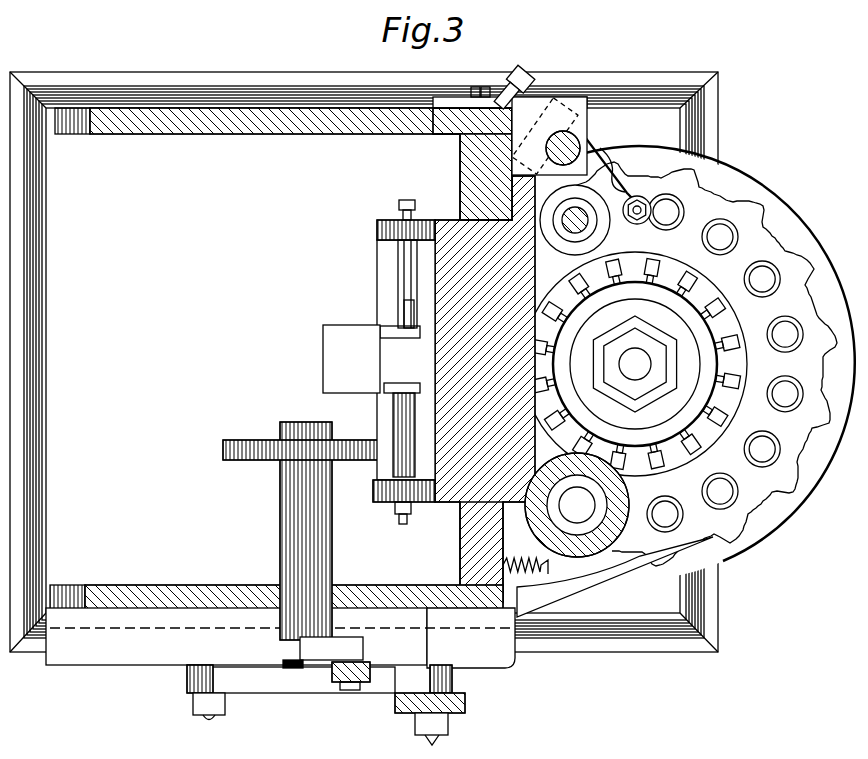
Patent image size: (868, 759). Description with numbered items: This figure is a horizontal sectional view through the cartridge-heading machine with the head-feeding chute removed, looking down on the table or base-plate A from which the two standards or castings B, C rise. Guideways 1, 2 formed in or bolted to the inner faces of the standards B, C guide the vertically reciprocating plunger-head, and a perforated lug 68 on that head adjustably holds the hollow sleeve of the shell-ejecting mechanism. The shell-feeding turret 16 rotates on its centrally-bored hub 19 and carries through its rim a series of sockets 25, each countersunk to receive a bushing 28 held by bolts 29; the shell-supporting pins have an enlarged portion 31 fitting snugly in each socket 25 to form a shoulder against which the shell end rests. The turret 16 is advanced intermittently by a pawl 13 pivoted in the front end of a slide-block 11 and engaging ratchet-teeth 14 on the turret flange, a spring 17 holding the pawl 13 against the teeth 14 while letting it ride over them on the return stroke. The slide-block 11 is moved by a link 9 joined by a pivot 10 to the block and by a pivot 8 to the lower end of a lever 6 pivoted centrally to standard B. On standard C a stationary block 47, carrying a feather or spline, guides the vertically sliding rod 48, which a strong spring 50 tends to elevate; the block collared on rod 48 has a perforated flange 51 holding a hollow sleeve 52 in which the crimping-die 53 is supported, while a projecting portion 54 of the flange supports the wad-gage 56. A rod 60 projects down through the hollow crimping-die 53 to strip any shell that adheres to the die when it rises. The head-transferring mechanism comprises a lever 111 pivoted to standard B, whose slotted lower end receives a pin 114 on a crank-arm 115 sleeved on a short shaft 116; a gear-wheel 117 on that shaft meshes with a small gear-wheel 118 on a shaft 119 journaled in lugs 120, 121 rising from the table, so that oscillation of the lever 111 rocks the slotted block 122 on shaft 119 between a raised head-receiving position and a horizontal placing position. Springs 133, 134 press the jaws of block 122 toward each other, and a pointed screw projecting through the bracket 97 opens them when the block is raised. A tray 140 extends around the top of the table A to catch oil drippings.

The guideway 1 is at (470, 200).
The guideway 2 is at (462, 524).
The lever 6 is at (466, 706).
The pivot 8 is at (433, 737).
The link 9 is at (297, 680).
The pivot 10 is at (214, 708).
The slide-block 11 is at (280, 638).
The pawl 13 is at (615, 577).
The ratchet-teeth 14 is at (792, 485).
The shell-feeding turret 16 is at (678, 514).
The spring 17 is at (515, 560).
The hub 19 is at (635, 364).
The perforations or sockets 25 is at (780, 274).
The bushing 28 is at (730, 232).
The bolts 29 is at (612, 266).
The enlarged portion 31 is at (485, 393).
The stationary block or bearing 47 is at (575, 100).
The rod 48 is at (563, 148).
The spring 50 is at (545, 108).
The perforated flange 51 is at (614, 185).
The hollow sleeve 52 is at (586, 208).
The crimping-die 53 is at (596, 230).
The projecting portion 54 is at (666, 195).
The wad-gage 56 is at (640, 196).
The rod 60 is at (568, 236).
The perforated lug 68 is at (603, 527).
The standard or bracket 97 is at (351, 359).
The lever 111 is at (370, 674).
The pin 114 is at (350, 692).
The crank-arm 115 is at (331, 648).
The short shaft 116 is at (288, 668).
The gear-wheel 117 is at (225, 448).
The small gear-wheel 118 is at (395, 440).
The shaft 119 is at (398, 270).
The lug 120 is at (377, 228).
The lug 121 is at (376, 503).
The block 122 is at (404, 318).
The spring 133 is at (392, 393).
The spring 134 is at (385, 330).
The tray 140 is at (684, 88).
The table or base-plate A is at (163, 294).
The standard B is at (165, 585).
The standard C is at (196, 134).